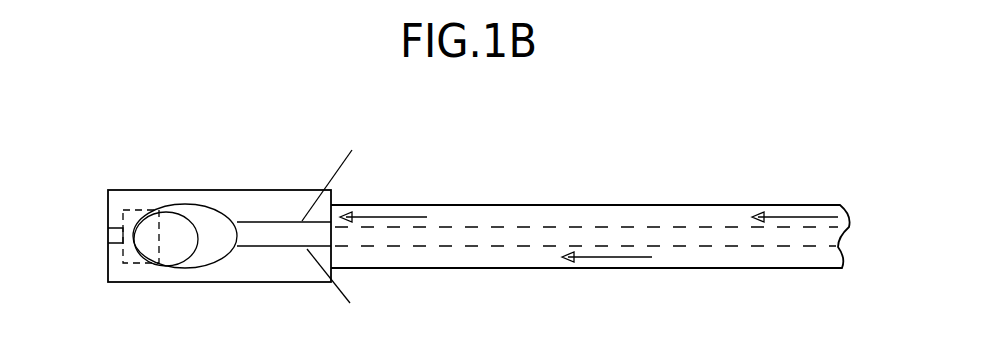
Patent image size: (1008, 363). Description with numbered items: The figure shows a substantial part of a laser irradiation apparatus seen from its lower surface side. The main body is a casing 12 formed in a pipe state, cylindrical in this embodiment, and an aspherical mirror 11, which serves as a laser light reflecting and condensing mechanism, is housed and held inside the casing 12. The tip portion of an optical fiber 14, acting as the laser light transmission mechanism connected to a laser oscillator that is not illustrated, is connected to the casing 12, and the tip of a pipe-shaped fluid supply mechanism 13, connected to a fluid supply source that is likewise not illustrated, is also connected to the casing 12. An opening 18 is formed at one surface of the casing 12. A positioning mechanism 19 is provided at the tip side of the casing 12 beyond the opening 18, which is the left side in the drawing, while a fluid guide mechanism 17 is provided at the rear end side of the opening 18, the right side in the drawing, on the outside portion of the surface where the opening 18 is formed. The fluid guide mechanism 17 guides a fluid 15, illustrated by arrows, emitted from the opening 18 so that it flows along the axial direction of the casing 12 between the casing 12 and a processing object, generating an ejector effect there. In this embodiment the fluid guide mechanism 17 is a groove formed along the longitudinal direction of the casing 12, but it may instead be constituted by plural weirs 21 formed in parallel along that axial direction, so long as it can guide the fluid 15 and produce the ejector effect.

The aspherical mirror 11 is at (143, 217).
The casing 12 is at (297, 190).
The fluid supply mechanism 13 is at (488, 217).
The optical fiber 14 is at (607, 238).
The fluid 15 is at (588, 259).
The fluid guide mechanism 17 is at (297, 240).
The opening 18 is at (212, 235).
The positioning mechanism 19 is at (123, 245).
The weirs 21 is at (342, 230).